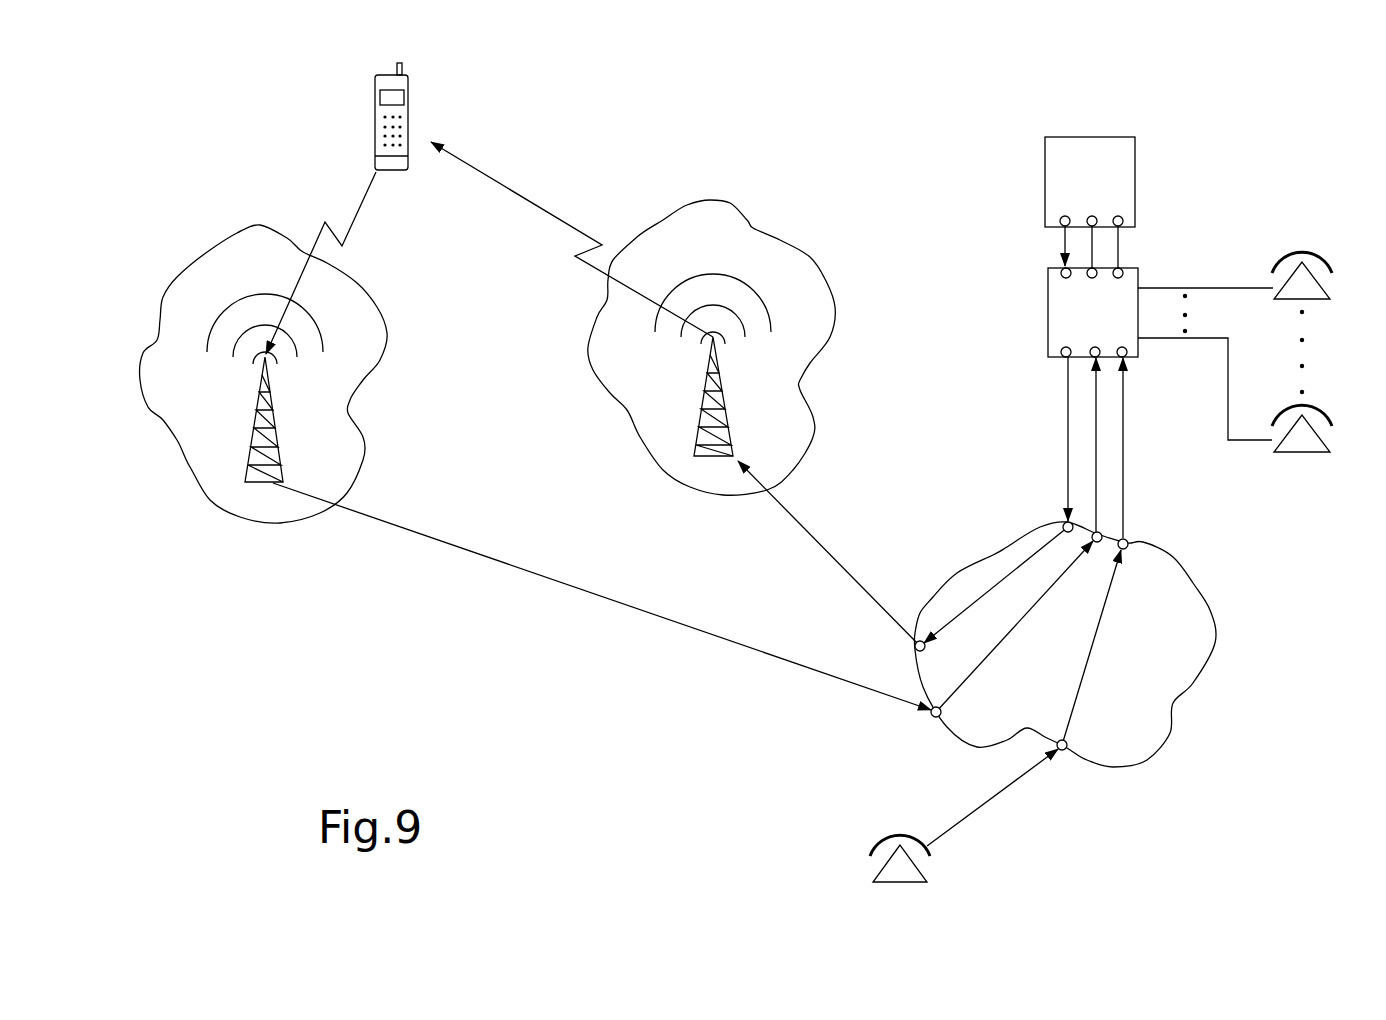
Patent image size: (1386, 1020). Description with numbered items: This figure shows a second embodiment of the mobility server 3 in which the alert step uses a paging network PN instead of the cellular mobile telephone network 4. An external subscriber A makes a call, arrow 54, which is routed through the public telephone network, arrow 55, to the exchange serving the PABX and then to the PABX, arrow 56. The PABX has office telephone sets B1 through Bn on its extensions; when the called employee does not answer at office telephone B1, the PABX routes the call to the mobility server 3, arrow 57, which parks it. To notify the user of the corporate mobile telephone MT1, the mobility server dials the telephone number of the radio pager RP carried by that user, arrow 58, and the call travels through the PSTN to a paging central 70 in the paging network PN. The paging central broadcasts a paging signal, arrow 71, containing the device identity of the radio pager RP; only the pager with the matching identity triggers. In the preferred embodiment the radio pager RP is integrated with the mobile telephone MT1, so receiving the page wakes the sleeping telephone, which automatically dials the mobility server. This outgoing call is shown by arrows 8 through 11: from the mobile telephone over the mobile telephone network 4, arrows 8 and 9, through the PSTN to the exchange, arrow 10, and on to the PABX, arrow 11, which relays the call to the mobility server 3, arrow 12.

The mobility server 3 is at (1137, 167).
The cellular mobile telephone network 4 is at (148, 345).
The outgoing call arrow 8 is at (353, 225).
The outgoing call arrow 9 is at (555, 582).
The call routing arrow 10 is at (1013, 632).
The call transmission arrow 11 is at (1097, 460).
The call relay arrow 12 is at (1090, 250).
The call from subscriber A 54 is at (955, 818).
The call routing through public telephone network 55 is at (1090, 660).
The incoming call to PABX 56 is at (1124, 478).
The call routed to mobility server 57 is at (1118, 250).
The alert call to radio pager 58 is at (1068, 457).
The paging central 70 is at (698, 412).
The paging signal 71 is at (528, 199).
The corporate mobile telephone MT1 is at (385, 98).
The radio pager RP is at (375, 158).
The paging network PN is at (810, 407).
The office telephone set B1 is at (1259, 279).
The office telephone set Bn is at (1260, 401).
The external subscriber A is at (887, 862).